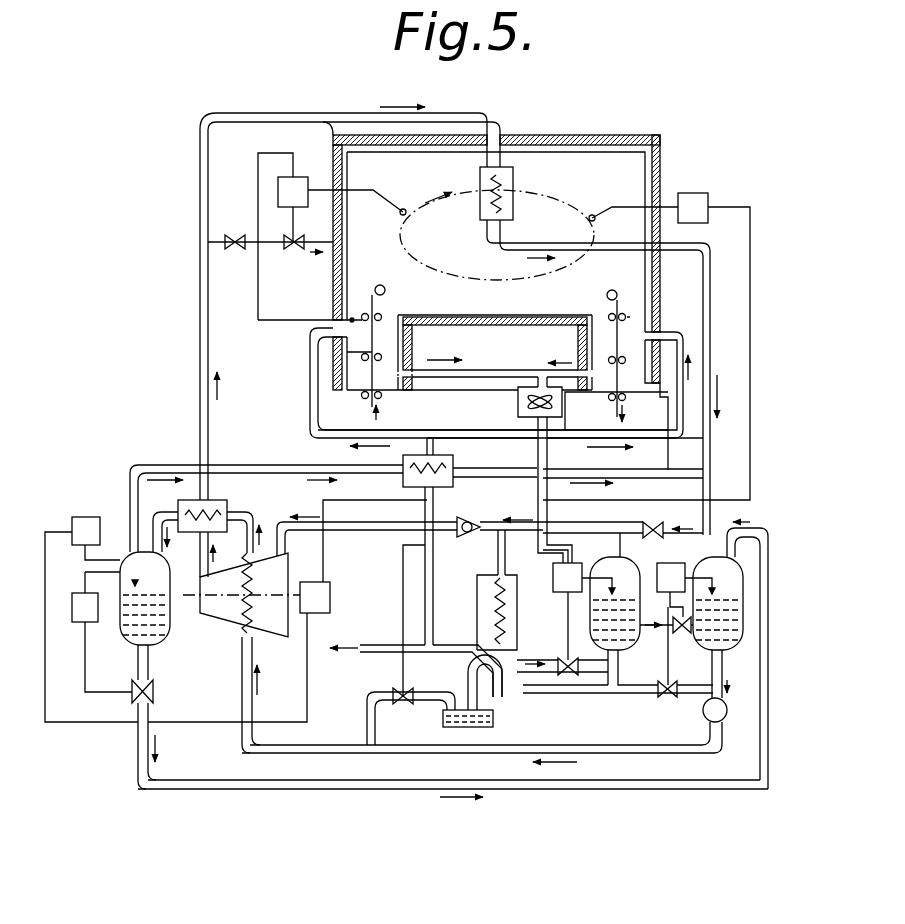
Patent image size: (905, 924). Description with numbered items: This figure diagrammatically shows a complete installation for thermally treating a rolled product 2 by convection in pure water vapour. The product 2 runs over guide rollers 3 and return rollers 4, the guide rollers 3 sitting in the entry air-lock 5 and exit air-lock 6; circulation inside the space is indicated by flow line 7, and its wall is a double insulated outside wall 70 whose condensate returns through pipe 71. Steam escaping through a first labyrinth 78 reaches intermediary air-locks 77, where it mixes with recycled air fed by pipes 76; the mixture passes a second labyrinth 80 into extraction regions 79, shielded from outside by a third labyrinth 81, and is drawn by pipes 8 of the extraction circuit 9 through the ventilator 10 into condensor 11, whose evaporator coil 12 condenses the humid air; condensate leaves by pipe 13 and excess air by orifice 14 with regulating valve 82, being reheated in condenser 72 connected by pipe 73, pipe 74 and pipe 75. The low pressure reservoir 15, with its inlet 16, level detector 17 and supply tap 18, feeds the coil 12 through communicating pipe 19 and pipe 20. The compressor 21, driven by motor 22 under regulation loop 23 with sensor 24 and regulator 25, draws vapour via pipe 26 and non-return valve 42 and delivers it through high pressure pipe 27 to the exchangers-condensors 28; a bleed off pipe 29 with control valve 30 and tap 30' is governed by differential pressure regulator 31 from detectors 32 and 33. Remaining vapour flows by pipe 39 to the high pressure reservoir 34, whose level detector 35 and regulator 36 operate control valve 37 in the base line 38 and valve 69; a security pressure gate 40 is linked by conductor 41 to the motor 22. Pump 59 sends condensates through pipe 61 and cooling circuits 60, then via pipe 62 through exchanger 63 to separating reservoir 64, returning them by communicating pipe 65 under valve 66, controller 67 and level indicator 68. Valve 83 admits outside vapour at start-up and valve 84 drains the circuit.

The rolled product 2 is at (452, 283).
The guide rollers 3 is at (352, 320).
The return rollers 4 is at (385, 288).
The entry air-lock 5 is at (412, 379).
The exit air-lock 6 is at (526, 346).
The flow line 7 is at (612, 135).
The extraction pipes 8 is at (463, 372).
The extraction circuit 9 is at (538, 457).
The ventilator 10 is at (518, 413).
The condensor 11 is at (517, 607).
The evaporator coil 12 is at (510, 628).
The condensate pipe 13 is at (497, 695).
The orifice 14 is at (445, 647).
The low pressure reservoir 15 is at (623, 565).
The inlet 16 is at (612, 592).
The level detector 17 is at (573, 575).
The supply tap 18 is at (572, 666).
The communicating pipe 19 is at (573, 693).
The pipe 20 is at (623, 529).
The compressor 21 is at (262, 627).
The motor 22 is at (318, 600).
The regulation loop 23 is at (751, 368).
The sensor 24 is at (595, 220).
The regulator 25 is at (693, 195).
The pipe 26 is at (332, 529).
The high pressure pipe 27 is at (205, 340).
The exchangers-condensors 28 is at (513, 175).
The bleed off pipe 29 is at (270, 244).
The control valve 30 is at (335, 227).
The tap 30' is at (238, 262).
The differential pressure regulator 31 is at (290, 195).
The differential pressure detector 32 is at (404, 208).
The differential pressure detector 33 is at (330, 332).
The high pressure reservoir 34 is at (725, 563).
The level detector 35 is at (712, 592).
The regulator 36 is at (672, 572).
The control valve 37 is at (662, 697).
The line 38 is at (642, 675).
The pipe 39 is at (708, 282).
The security pressure gate 40 is at (83, 527).
The conductor 41 is at (62, 723).
The non-return valve 42 is at (478, 512).
The pump 59 is at (722, 713).
The cooling circuits 60 is at (246, 592).
The pipe 61 is at (447, 747).
The pipe 62 is at (158, 512).
The exchanger 63 is at (223, 507).
The separating reservoir 64 is at (155, 572).
The communicating pipe 65 is at (382, 782).
The valve 66 is at (157, 690).
The controller 67 is at (78, 605).
The level indicator 68 is at (135, 593).
The valve 69 is at (677, 634).
The double insulated outside wall 70 is at (592, 155).
The pipe 71 is at (668, 455).
The condenser 72 is at (452, 480).
The pipe 73 is at (433, 598).
The pipe 74 is at (300, 467).
The pipe 75 is at (633, 473).
The pipes 76 is at (313, 407).
The intermediary air-locks 77 is at (383, 316).
The first labyrinth 78 is at (355, 312).
The extraction regions 79 is at (357, 370).
The second labyrinth 80 is at (381, 357).
The third labyrinth 81 is at (353, 392).
The regulating valve 82 is at (382, 652).
The valve 83 is at (642, 530).
The valve 84 is at (403, 705).